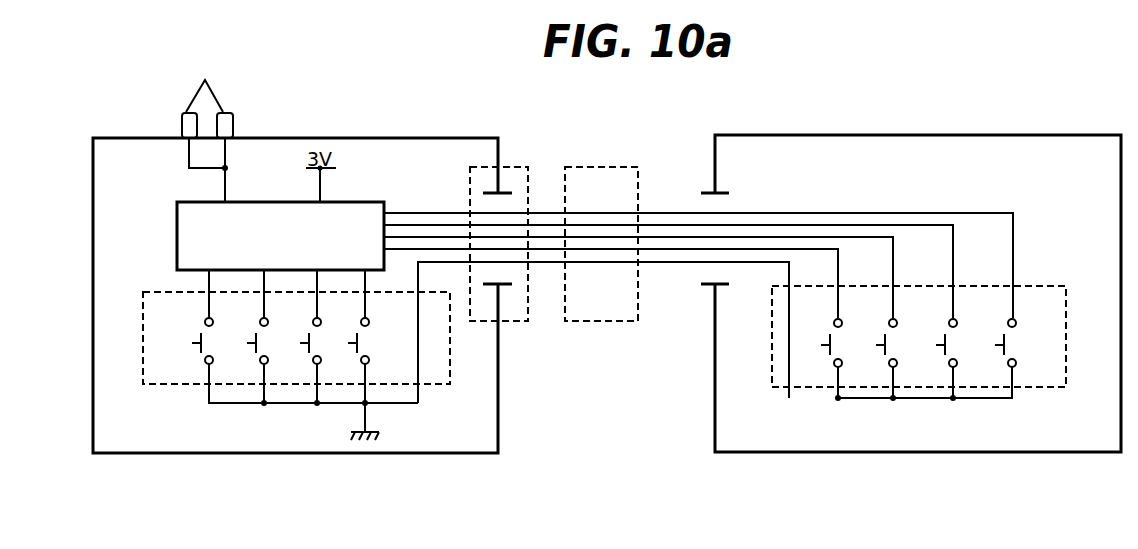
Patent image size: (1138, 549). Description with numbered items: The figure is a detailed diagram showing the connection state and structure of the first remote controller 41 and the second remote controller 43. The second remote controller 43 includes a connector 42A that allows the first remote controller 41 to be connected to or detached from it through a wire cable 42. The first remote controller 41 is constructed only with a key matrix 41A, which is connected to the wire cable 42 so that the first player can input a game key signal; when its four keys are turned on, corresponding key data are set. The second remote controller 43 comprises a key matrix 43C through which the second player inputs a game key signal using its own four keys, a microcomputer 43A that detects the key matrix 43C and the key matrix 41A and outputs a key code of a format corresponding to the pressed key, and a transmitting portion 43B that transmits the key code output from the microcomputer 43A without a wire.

The first remote controller 41 is at (871, 452).
The key matrix 41A is at (778, 364).
The wire cable 42 is at (601, 312).
The connector 42A is at (516, 175).
The second remote controller 43 is at (390, 453).
The microcomputer 43A is at (177, 213).
The transmitting portion 43B is at (207, 126).
The key matrix 43C is at (150, 313).